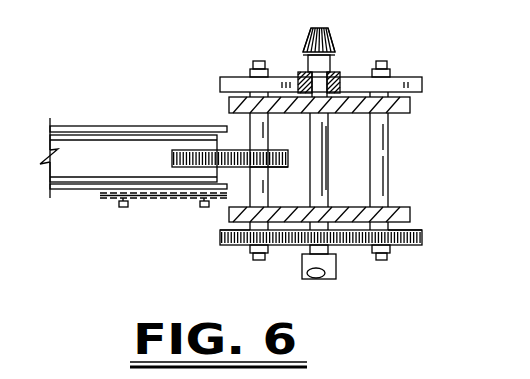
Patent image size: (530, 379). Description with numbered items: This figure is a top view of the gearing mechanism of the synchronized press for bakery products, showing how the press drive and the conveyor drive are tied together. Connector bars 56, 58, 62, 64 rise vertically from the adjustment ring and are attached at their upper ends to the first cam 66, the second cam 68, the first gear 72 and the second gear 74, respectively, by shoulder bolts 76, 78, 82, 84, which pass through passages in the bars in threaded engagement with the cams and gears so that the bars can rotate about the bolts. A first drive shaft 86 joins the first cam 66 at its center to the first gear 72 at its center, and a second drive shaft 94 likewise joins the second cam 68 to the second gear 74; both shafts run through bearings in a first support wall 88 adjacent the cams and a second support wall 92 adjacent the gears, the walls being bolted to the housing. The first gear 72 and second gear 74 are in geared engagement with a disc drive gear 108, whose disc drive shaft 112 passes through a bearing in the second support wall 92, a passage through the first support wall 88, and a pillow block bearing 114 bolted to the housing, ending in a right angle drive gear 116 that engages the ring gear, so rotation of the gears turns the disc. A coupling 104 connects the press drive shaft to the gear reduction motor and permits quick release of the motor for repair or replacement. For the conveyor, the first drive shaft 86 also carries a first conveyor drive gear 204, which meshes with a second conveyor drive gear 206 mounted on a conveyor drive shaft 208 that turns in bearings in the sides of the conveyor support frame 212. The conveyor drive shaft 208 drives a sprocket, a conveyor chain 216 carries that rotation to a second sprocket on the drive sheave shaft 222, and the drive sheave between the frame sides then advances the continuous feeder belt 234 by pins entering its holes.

The connector bar 56 is at (252, 70).
The connector bar 58 is at (388, 70).
The connector bar 62 is at (250, 254).
The connector bar 64 is at (386, 254).
The first cam 66 is at (230, 80).
The second cam 68 is at (405, 78).
The first gear 72 is at (228, 247).
The second gear 74 is at (408, 247).
The shoulder bolt 76 is at (262, 61).
The shoulder bolt 78 is at (386, 62).
The shoulder bolt 82 is at (260, 261).
The shoulder bolt 84 is at (377, 261).
The first drive shaft 86 is at (268, 130).
The first support wall 88 is at (410, 106).
The second support wall 92 is at (410, 215).
The second drive shaft 94 is at (388, 157).
The coupling 104 is at (325, 270).
The disc drive gear 108 is at (300, 246).
The disc drive shaft 112 is at (322, 160).
The pillow block bearing 114 is at (338, 70).
The right angle drive gear 116 is at (328, 36).
The first conveyor drive gear 204 is at (282, 168).
The second conveyor drive gear 206 is at (188, 150).
The conveyor drive shaft 208 is at (205, 208).
The conveyor support frame 212 is at (89, 126).
The conveyor chain 216 is at (147, 201).
The drive sheave shaft 222 is at (118, 205).
The feeder belt 234 is at (84, 166).